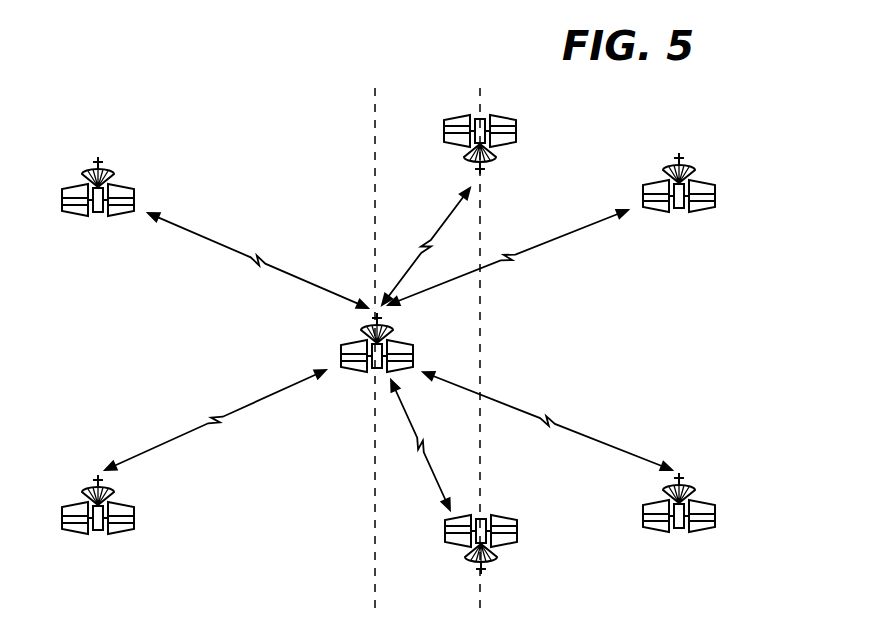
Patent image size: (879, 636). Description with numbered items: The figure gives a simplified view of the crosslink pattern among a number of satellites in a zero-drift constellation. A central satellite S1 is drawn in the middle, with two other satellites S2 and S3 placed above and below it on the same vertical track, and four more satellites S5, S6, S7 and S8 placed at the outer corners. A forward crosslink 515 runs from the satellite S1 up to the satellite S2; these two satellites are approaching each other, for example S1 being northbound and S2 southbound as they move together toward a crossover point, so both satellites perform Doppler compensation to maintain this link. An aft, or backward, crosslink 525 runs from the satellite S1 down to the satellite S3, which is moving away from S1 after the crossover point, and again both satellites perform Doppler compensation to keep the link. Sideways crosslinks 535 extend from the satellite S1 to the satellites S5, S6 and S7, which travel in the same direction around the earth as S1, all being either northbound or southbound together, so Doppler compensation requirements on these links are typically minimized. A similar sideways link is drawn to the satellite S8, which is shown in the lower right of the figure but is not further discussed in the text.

The satellite S1 is at (348, 333).
The satellite S2 is at (528, 131).
The satellite S3 is at (528, 530).
The satellite S5 is at (97, 218).
The satellite S6 is at (678, 214).
The satellite S7 is at (97, 536).
The satellite S8 is at (678, 534).
The forward crosslink 515 is at (446, 218).
The aft (backward) crosslink 525 is at (418, 428).
The sideways crosslinks 535 is at (570, 236).